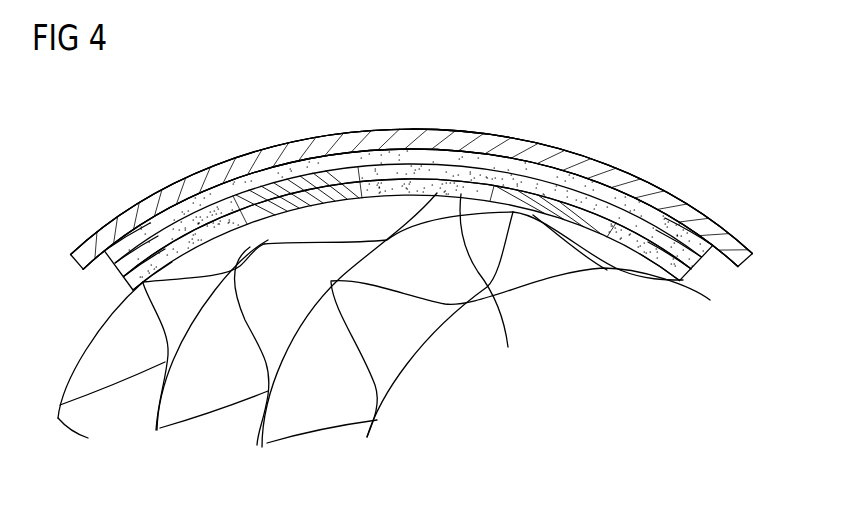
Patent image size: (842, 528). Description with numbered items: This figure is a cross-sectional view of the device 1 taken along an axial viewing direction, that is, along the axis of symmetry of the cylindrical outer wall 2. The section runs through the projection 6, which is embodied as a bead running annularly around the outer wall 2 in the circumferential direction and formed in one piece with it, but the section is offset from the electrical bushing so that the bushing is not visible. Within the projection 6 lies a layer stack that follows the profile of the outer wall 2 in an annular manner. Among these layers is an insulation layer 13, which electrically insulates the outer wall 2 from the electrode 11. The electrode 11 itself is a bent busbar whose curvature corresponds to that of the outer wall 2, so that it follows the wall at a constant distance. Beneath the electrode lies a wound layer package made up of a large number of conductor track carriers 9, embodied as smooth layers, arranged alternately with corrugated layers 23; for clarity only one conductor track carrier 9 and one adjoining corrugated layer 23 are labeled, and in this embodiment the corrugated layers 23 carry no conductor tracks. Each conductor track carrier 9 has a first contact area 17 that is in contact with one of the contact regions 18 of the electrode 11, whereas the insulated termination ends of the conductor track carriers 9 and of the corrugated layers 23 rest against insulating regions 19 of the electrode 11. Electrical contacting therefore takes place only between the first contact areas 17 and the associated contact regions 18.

The device 1 is at (623, 70).
The outer wall 2 is at (217, 165).
The projection 6 is at (412, 184).
The conductor track carrier 9 is at (157, 405).
The electrode 11 is at (110, 265).
The insulation layer 13 is at (699, 253).
The first contact area 17 is at (322, 197).
The contact region 18 is at (288, 190).
The insulating region 19 is at (487, 286).
The corrugated layer 23 is at (220, 417).